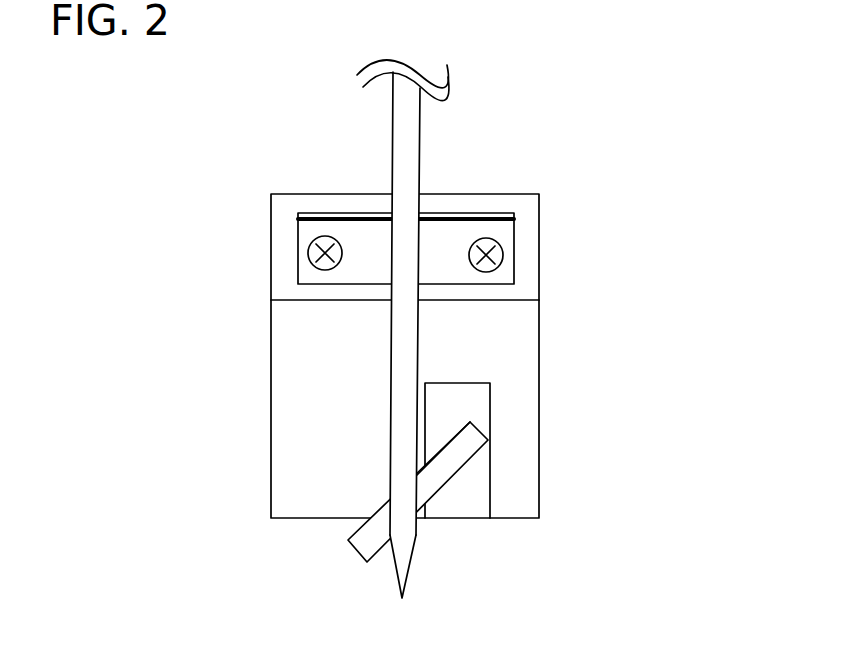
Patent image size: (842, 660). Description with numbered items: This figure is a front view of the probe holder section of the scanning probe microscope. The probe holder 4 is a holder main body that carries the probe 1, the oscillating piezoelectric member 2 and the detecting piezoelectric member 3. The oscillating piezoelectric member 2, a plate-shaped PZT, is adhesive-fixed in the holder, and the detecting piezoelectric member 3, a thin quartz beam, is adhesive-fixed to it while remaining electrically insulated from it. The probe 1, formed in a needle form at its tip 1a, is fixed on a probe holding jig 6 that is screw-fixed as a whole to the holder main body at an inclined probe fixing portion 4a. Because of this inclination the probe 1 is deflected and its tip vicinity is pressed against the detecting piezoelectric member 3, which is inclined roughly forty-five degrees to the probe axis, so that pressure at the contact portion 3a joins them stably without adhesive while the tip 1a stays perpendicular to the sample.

The probe 1 is at (405, 435).
The tip 1a is at (402, 555).
The oscillating piezoelectric member 2 is at (470, 405).
The detecting piezoelectric member 3 is at (360, 552).
The contact portion 3a is at (402, 503).
The probe holder 4 is at (332, 363).
The probe fixing portion 4a is at (530, 223).
The probe holding jig 6 is at (360, 235).